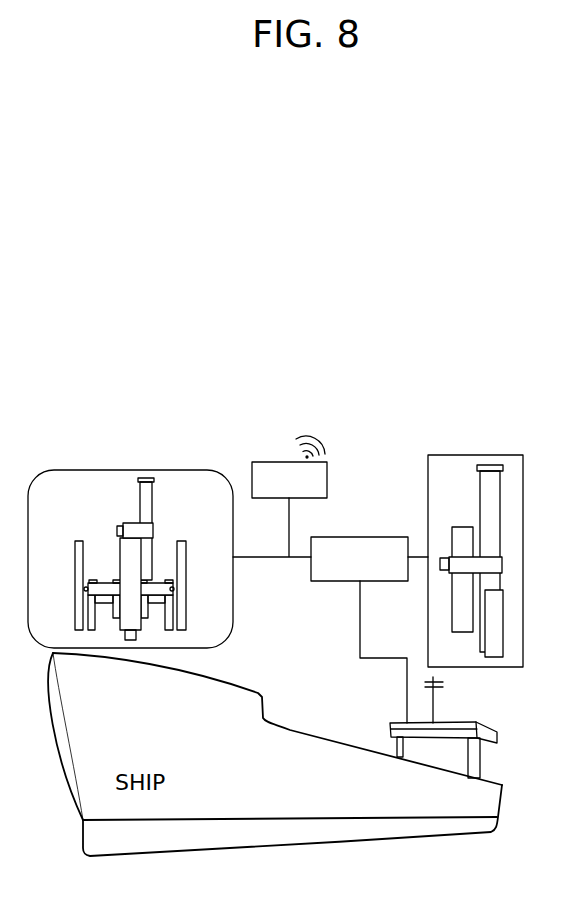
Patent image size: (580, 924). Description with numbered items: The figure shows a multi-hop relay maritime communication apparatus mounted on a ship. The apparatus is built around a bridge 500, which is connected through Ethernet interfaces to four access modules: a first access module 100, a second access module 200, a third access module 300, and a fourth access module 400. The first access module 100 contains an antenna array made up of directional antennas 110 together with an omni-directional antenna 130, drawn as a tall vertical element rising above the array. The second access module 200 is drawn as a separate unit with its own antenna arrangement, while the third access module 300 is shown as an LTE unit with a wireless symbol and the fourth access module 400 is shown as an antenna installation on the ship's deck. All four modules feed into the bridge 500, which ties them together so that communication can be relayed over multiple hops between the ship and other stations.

The first access module 100 is at (78, 470).
The directional antennas 110 is at (185, 610).
The omni-directional antenna 130 is at (150, 495).
The second access module 200 is at (470, 455).
The third access module 300 is at (328, 478).
The fourth access module 400 is at (468, 722).
The bridge 500 is at (328, 582).